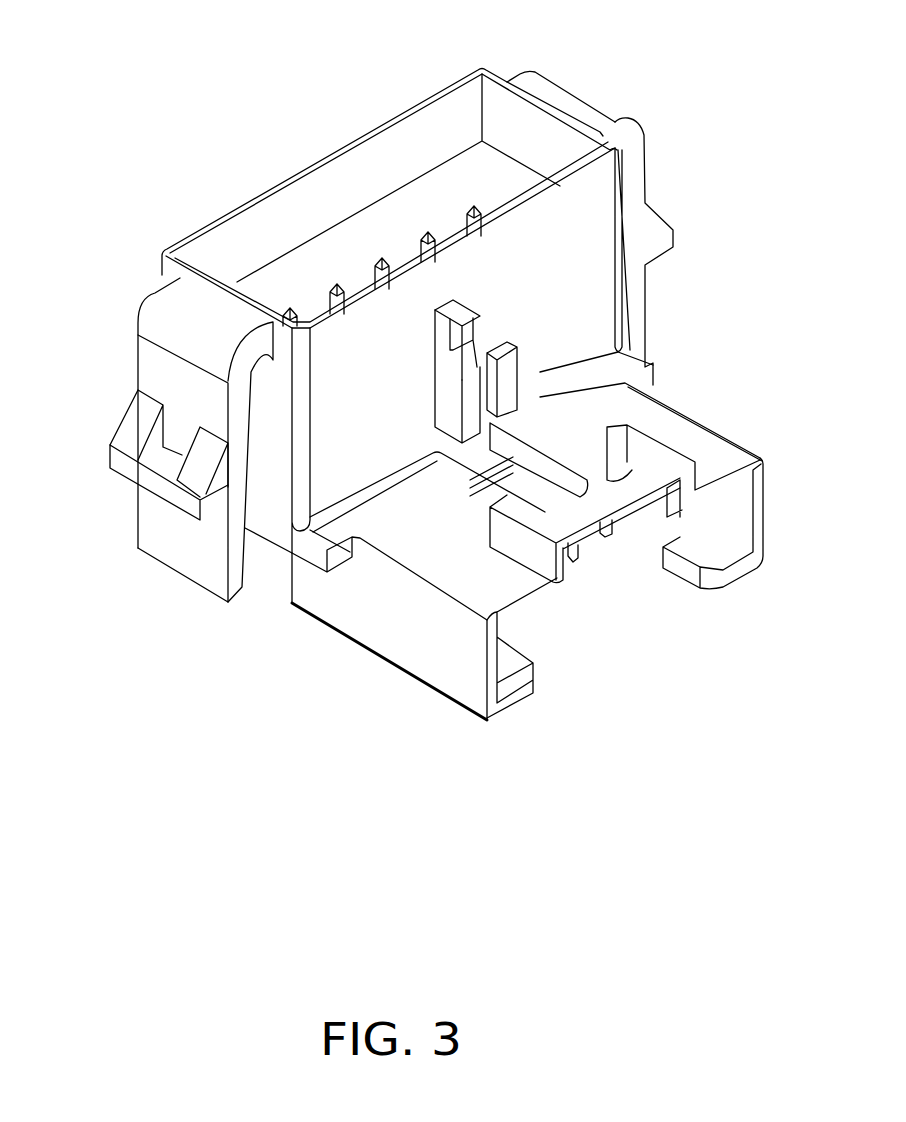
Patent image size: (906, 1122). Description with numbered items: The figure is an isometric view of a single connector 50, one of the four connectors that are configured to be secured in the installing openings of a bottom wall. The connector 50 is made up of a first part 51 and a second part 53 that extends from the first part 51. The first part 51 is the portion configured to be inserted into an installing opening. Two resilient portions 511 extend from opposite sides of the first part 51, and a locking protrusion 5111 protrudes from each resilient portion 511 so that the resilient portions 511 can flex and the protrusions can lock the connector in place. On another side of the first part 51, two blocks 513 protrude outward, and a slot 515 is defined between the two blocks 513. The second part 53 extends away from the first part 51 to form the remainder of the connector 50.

The connector 50 is at (262, 112).
The first part 51 is at (330, 481).
The resilient portion 511 is at (173, 548).
The locking protrusion 5111 is at (162, 468).
The block 513 is at (510, 390).
The slot 515 is at (480, 353).
The second part 53 is at (447, 550).